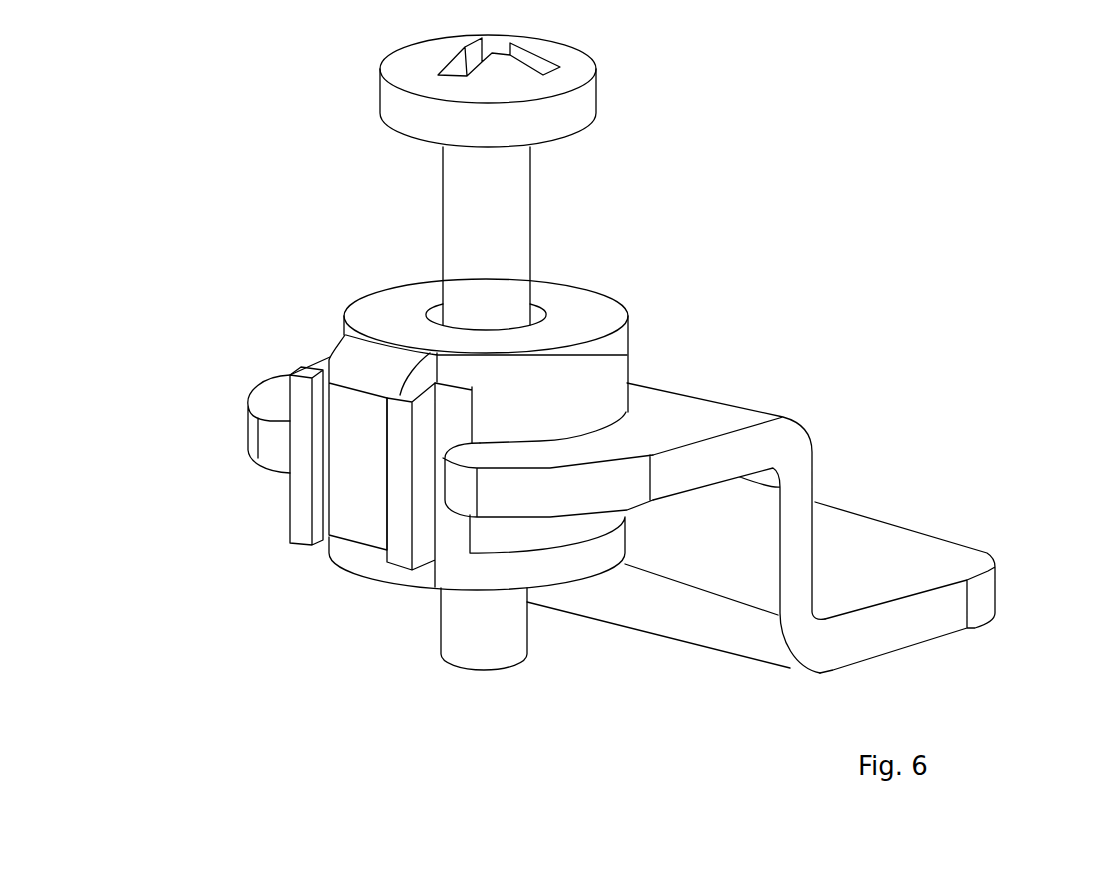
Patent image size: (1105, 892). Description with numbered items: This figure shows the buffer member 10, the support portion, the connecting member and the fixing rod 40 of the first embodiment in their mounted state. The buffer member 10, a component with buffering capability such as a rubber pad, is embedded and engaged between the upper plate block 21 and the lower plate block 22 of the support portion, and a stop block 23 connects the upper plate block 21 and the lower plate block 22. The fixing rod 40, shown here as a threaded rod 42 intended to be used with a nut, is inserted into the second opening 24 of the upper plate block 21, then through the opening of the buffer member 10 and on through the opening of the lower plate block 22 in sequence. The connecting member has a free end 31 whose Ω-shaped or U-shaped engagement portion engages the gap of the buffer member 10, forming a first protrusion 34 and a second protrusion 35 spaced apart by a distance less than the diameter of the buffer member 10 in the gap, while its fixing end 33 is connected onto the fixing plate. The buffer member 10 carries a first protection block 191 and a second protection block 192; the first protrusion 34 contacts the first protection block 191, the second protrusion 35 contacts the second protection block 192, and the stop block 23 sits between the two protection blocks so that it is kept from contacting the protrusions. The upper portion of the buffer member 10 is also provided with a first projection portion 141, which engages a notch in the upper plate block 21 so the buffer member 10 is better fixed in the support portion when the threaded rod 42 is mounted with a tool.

The buffer member 10 is at (577, 408).
The upper plate block 21 is at (390, 300).
The lower plate block 22 is at (575, 562).
The stop block 23 is at (340, 470).
The second opening 24 is at (540, 316).
The free end 31 is at (663, 430).
The fixing end 33 is at (898, 570).
The first protrusion 34 is at (272, 403).
The second protrusion 35 is at (500, 458).
The fixing rod 40 is at (500, 212).
The threaded rod 42 is at (683, 385).
The first projection portion 141 is at (568, 287).
The first protection block 191 is at (305, 457).
The second protection block 192 is at (425, 487).